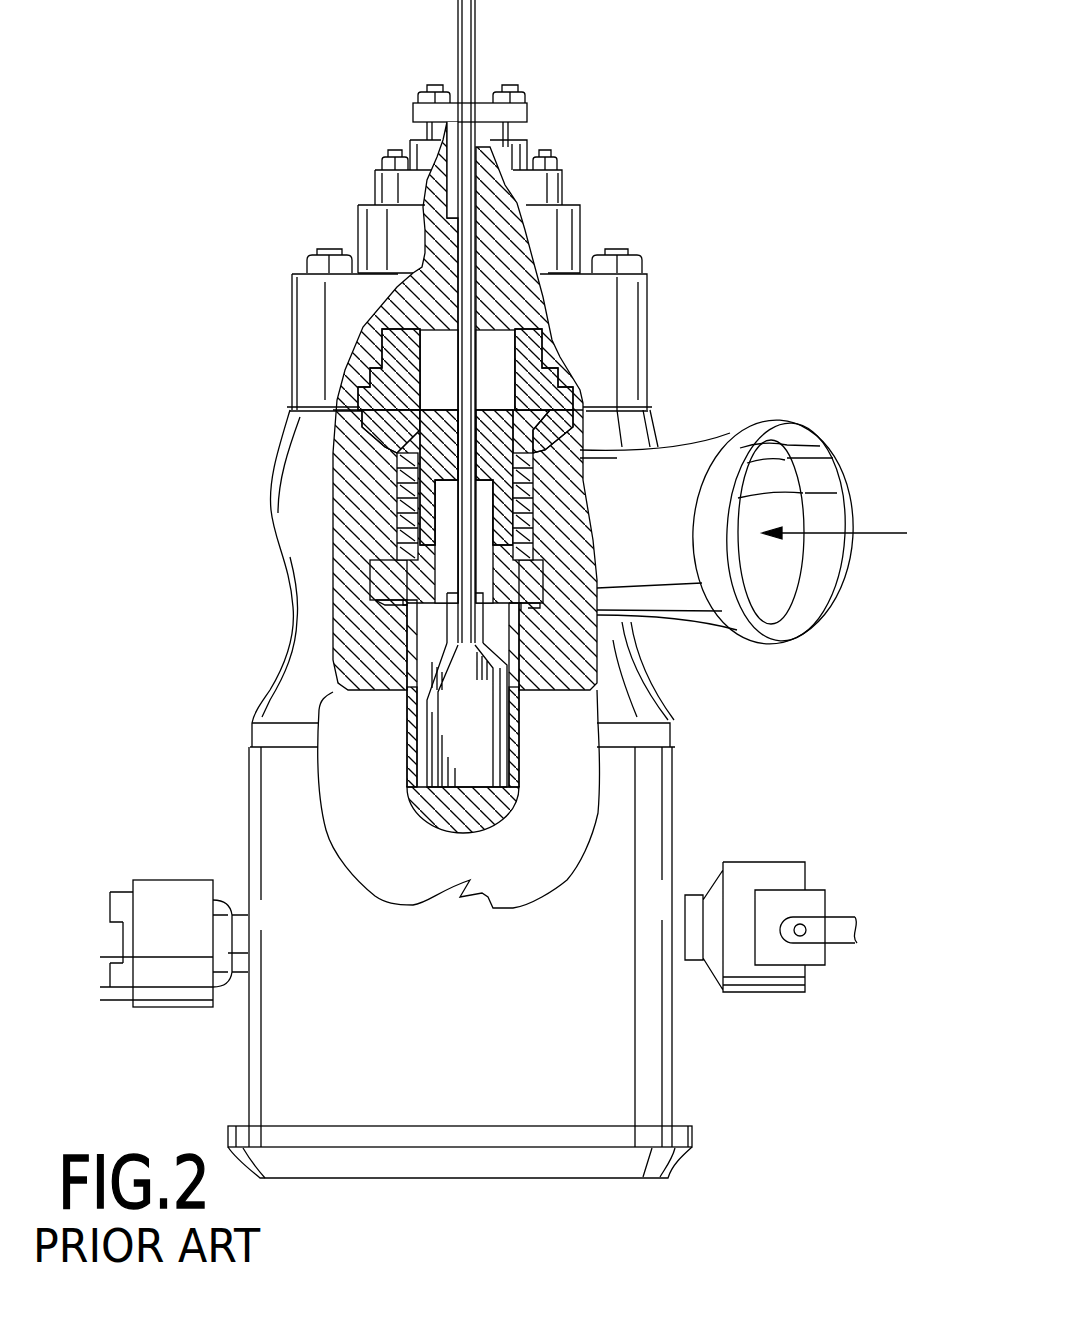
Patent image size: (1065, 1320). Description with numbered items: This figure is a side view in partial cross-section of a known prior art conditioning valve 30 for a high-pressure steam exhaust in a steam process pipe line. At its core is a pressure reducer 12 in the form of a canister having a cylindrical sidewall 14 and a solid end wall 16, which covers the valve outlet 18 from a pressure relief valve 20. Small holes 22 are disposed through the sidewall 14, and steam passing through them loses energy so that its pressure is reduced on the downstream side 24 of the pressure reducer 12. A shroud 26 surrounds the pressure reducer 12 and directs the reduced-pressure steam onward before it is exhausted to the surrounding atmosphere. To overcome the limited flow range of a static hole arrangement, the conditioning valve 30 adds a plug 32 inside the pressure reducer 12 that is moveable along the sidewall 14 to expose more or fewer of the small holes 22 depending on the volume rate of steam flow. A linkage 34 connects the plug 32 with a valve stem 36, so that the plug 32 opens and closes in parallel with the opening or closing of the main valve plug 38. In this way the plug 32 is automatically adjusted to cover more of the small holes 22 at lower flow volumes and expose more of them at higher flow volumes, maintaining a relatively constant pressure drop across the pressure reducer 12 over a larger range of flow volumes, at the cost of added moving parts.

The conditioning valve 30 is at (503, 589).
The pressure reducer 12 is at (459, 715).
The cylindrical sidewall 14 is at (592, 720).
The end wall 16 is at (482, 805).
The valve outlet 18 is at (443, 570).
The pressure relief valve 20 is at (385, 502).
The small holes 22 is at (410, 742).
The downstream side 24 is at (433, 877).
The shroud 26 is at (283, 848).
The plug 32 is at (445, 656).
The linkage 34 is at (447, 603).
The valve stem 36 is at (458, 353).
The main valve plug 38 is at (427, 477).